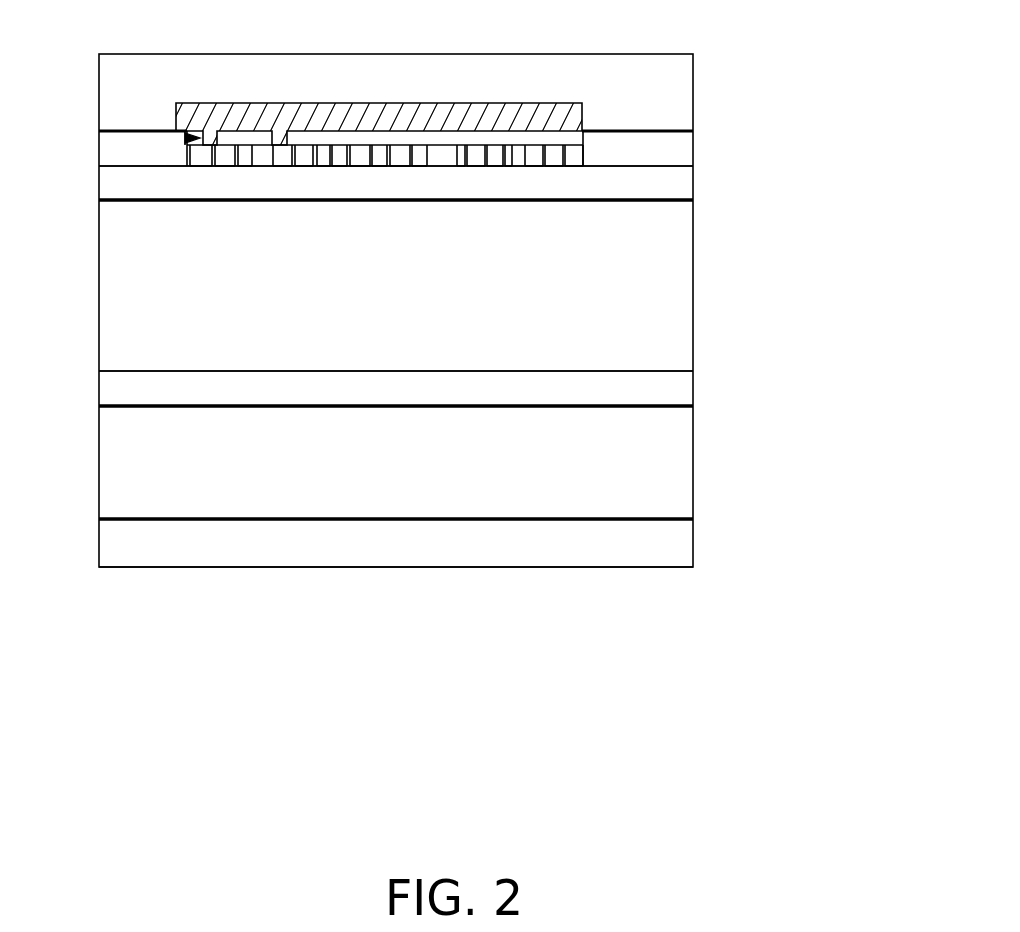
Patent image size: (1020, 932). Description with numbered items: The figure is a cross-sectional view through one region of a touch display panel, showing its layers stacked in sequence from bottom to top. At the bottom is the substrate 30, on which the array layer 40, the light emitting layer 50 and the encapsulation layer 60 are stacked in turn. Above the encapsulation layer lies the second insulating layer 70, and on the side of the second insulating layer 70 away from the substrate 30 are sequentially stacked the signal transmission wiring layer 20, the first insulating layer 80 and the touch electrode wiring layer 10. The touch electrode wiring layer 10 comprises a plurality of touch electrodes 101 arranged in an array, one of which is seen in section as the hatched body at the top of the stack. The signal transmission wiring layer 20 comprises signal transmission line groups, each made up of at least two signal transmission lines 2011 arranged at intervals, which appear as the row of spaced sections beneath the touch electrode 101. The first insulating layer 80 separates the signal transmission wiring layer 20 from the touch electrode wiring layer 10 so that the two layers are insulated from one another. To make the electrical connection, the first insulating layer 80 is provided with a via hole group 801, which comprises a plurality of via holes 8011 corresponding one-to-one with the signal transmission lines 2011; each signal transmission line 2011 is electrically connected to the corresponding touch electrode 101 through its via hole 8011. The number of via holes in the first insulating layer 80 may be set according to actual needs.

The touch electrode wiring layer 10 is at (485, 76).
The touch electrode 101 is at (582, 112).
The signal transmission wiring layer 20 is at (509, 111).
The signal transmission line 2011 is at (565, 158).
The substrate 30 is at (678, 543).
The array layer 40 is at (675, 488).
The light emitting layer 50 is at (675, 392).
The encapsulation layer 60 is at (675, 317).
The second insulating layer 70 is at (677, 192).
The first insulating layer 80 is at (677, 152).
The via hole group 801 is at (120, 172).
The via hole 8011 is at (187, 138).